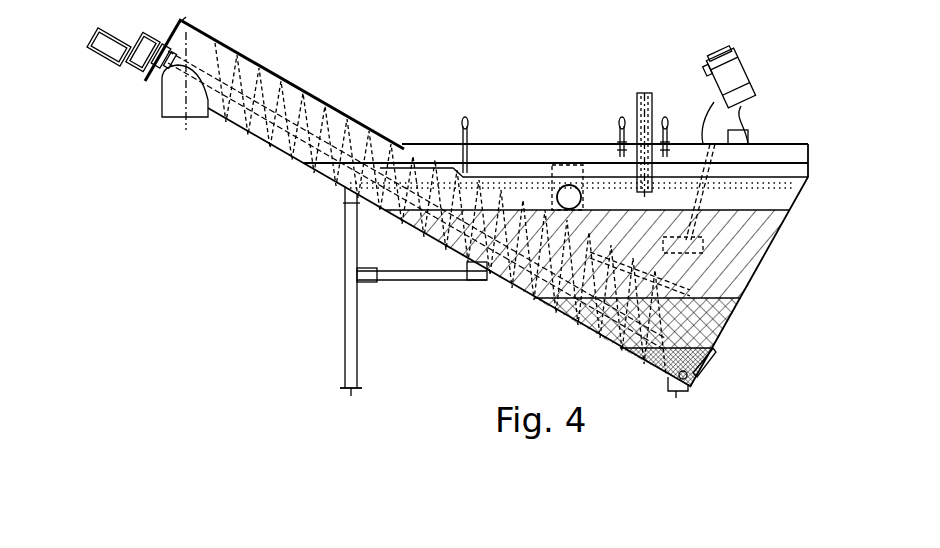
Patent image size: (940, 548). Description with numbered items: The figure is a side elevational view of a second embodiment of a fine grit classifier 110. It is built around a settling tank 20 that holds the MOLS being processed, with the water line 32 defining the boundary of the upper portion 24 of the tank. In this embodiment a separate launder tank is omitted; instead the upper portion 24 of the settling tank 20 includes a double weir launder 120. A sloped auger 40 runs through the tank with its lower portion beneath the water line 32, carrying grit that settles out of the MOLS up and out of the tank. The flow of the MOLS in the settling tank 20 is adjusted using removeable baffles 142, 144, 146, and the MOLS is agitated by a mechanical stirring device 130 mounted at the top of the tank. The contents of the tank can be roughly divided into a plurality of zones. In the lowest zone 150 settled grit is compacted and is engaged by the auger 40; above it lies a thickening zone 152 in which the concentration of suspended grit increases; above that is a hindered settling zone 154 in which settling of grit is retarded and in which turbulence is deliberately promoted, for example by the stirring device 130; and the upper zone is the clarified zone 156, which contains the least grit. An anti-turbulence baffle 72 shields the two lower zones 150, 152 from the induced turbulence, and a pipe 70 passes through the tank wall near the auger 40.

The settling tank 20 is at (484, 273).
The upper portion 24 is at (512, 157).
The water line 32 is at (353, 167).
The sloped auger 40 is at (307, 140).
The inlet pipe 70 is at (561, 208).
The anti-turbulence baffle 72 is at (562, 313).
The fine grit classifier 110 is at (236, 173).
The double weir launder 120 is at (553, 168).
The mechanical stirring device 130 is at (744, 82).
The removeable baffle 142 is at (461, 119).
The removeable baffle 144 is at (619, 131).
The level sensor 146 is at (666, 120).
The lowest zone 150 is at (776, 350).
The thickening zone 152 is at (736, 306).
The hindered settling zone 154 is at (655, 250).
The clarified zone 156 is at (656, 175).